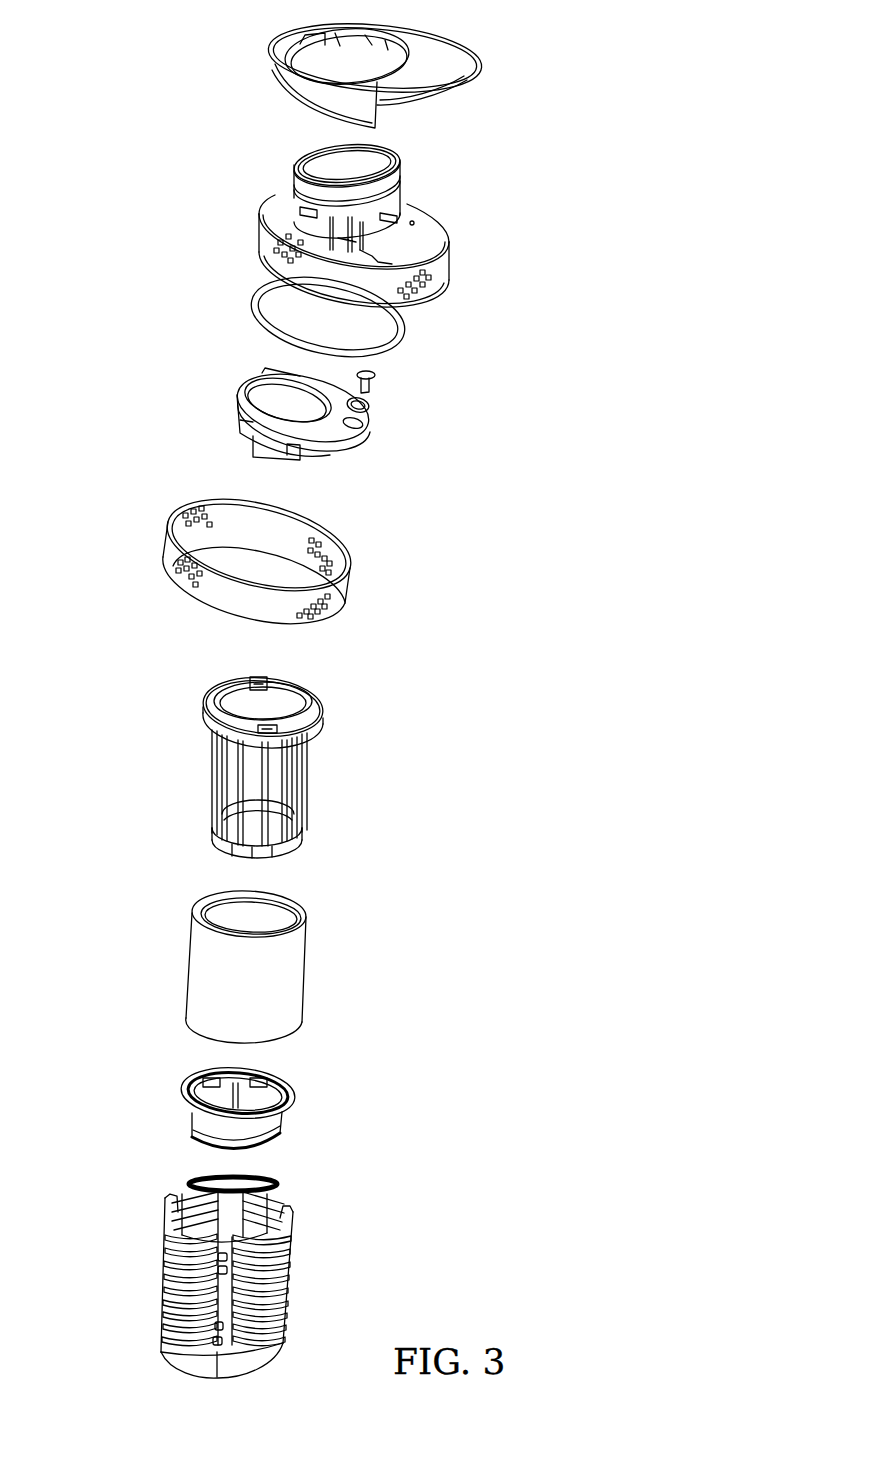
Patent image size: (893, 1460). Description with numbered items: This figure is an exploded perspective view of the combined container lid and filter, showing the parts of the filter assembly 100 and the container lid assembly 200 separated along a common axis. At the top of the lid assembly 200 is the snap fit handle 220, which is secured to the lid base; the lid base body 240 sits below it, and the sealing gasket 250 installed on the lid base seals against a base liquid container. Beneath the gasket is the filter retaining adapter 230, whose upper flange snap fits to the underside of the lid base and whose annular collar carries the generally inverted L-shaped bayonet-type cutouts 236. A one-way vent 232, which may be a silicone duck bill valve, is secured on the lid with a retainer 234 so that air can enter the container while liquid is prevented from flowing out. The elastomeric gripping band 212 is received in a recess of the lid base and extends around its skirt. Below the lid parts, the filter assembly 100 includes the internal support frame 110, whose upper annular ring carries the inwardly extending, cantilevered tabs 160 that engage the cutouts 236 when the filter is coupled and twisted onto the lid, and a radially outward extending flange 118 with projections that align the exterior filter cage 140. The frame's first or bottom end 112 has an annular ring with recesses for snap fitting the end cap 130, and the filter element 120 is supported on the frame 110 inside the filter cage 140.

The filter assembly 100 is at (192, 678).
The internal support frame 110 is at (316, 777).
The first (bottom) end 112 is at (300, 846).
The radially outward extending flange 118 is at (322, 727).
The filter element 120 is at (316, 975).
The end cap 130 is at (300, 1122).
The exterior filter cage 140 is at (300, 1278).
The inwardly extending projections or tabs 160 is at (257, 676).
The container lid assembly 200 is at (287, 7).
The gripping band 212 is at (340, 596).
The snap fit handle 220 is at (470, 78).
The filter retaining adapter 230 is at (355, 433).
The one-way vent 232 is at (373, 376).
The retainer 234 is at (362, 406).
The cutouts 236 is at (273, 447).
The cap body 240 is at (432, 216).
The sealing gasket 250 is at (405, 334).